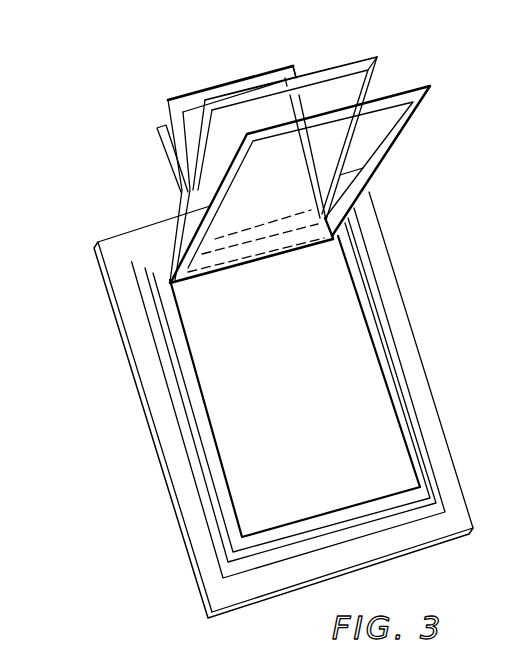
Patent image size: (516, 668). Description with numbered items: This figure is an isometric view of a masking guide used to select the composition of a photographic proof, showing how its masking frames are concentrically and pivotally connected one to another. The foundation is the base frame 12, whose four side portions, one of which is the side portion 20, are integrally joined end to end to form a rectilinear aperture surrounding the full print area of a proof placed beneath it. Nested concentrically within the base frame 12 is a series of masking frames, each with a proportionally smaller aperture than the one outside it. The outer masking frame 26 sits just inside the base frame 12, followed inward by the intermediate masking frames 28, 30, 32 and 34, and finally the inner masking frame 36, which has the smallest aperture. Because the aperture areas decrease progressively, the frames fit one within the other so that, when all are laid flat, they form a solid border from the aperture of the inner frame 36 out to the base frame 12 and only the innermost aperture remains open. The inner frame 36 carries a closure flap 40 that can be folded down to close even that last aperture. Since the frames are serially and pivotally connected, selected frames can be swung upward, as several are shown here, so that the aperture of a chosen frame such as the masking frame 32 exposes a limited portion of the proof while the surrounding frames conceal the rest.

The base frame 12 is at (172, 457).
The side portion 20 is at (329, 141).
The outer masking frame 26 is at (168, 370).
The intermediate masking frame 28 is at (163, 327).
The intermediate masking frame 30 is at (173, 302).
The intermediate masking frame 32 is at (400, 97).
The intermediate masking frame 34 is at (318, 80).
The inner masking frame 36 is at (215, 93).
The closure flap 40 is at (158, 125).